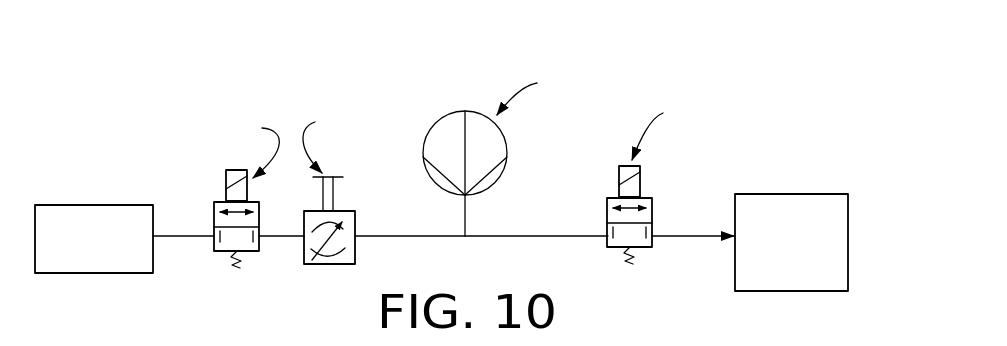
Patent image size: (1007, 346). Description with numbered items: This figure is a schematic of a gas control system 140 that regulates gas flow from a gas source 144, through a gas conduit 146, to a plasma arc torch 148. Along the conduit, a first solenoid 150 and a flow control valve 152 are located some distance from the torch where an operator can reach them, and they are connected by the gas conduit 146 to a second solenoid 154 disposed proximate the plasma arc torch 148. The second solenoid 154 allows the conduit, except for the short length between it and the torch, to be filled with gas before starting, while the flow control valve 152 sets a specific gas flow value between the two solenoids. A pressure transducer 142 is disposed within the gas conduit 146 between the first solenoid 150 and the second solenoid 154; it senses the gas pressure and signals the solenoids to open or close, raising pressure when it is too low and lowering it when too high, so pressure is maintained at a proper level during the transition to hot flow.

The gas control system 140 is at (717, 72).
The pressure transducer 142 is at (497, 182).
The gas source 144 is at (68, 273).
The gas conduit 146 is at (495, 237).
The plasma arc torch 148 is at (808, 194).
The first solenoid 150 is at (250, 252).
The flow control valve 152 is at (357, 250).
The second solenoid 154 is at (643, 248).